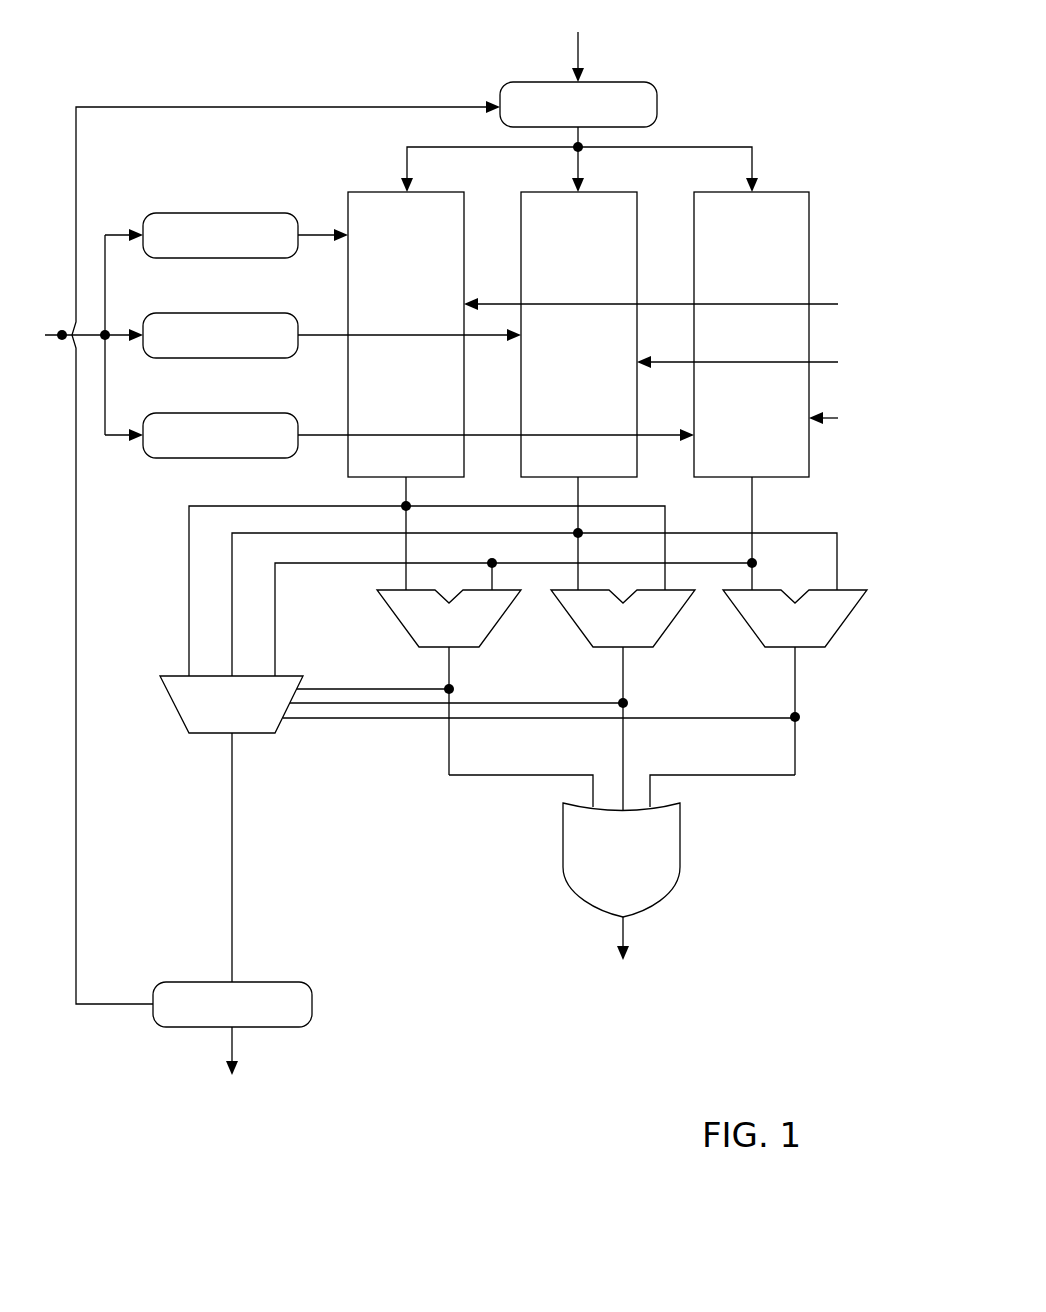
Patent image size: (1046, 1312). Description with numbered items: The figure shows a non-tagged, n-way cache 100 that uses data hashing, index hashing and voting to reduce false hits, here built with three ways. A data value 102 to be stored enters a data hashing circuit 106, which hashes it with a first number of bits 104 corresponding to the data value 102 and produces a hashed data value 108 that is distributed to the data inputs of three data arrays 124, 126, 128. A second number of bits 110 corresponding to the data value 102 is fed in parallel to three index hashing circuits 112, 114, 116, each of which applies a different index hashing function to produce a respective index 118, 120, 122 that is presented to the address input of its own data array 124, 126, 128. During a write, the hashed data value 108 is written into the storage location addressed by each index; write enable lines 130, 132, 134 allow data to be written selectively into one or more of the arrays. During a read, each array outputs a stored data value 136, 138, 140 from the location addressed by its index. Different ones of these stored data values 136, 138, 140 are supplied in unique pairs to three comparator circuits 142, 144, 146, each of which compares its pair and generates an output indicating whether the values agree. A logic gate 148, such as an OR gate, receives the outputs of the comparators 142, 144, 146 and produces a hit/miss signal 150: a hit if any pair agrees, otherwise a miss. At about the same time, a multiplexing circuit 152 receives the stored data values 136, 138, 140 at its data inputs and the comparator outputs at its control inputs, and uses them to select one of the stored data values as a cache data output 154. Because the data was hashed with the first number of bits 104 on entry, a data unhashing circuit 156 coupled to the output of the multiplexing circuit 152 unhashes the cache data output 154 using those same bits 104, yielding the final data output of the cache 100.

The non-tagged, n-way cache 100 is at (790, 1038).
The data value 102 is at (578, 60).
The first number of bits 104 is at (76, 706).
The data hashing circuit 106 is at (606, 82).
The hashed data value 108 is at (752, 162).
The second number of bits 110 is at (105, 320).
The index hashing circuit 112 is at (176, 213).
The index hashing circuit 114 is at (176, 313).
The index hashing circuit 116 is at (176, 413).
The index 118 is at (318, 233).
The index 120 is at (318, 333).
The index 122 is at (333, 433).
The data array 124 is at (464, 276).
The data array 126 is at (637, 232).
The data array 128 is at (810, 265).
The write enable line 130 is at (648, 304).
The write enable line 132 is at (668, 340).
The write enable line 134 is at (820, 422).
The stored data value 136 is at (408, 490).
The stored data value 138 is at (580, 490).
The stored data value 140 is at (754, 490).
The comparator circuit 142 is at (463, 648).
The comparator circuit 144 is at (637, 648).
The comparator circuit 146 is at (809, 648).
The logic gate 148 is at (680, 845).
The hit/miss signal 150 is at (620, 930).
The multiplexing circuit 152 is at (245, 735).
The cache data output 154 is at (232, 877).
The data unhashing circuit 156 is at (312, 1004).